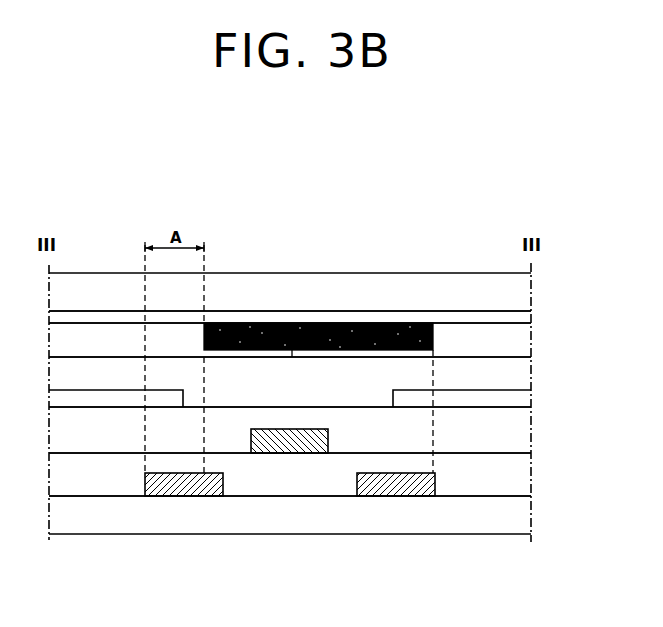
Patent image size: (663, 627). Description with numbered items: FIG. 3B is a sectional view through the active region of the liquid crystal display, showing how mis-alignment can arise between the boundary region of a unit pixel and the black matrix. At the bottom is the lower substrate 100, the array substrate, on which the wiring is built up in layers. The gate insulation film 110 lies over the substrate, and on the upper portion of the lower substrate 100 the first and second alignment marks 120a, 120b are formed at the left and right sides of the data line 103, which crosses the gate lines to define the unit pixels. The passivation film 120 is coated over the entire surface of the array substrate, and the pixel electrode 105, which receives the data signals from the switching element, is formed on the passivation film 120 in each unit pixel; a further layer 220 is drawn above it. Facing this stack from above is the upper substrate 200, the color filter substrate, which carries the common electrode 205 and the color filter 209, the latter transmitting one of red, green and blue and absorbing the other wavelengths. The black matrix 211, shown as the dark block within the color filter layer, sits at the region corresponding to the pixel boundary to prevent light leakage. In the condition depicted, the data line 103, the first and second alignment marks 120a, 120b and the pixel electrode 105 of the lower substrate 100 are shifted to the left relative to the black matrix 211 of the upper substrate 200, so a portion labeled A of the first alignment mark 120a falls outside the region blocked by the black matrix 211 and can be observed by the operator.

The lower substrate 100 is at (524, 517).
The gate insulation film 110 is at (524, 471).
The first alignment mark 120a is at (183, 496).
The second alignment mark 120b is at (396, 496).
The data line 103 is at (289, 453).
The passivation film 120 is at (524, 432).
The pixel electrode 105 is at (524, 397).
The interlayer insulating layer 220 is at (524, 372).
The color filter 209 is at (524, 343).
The black matrix 211 is at (326, 323).
The common electrode 205 is at (524, 318).
The upper substrate 200 is at (524, 287).